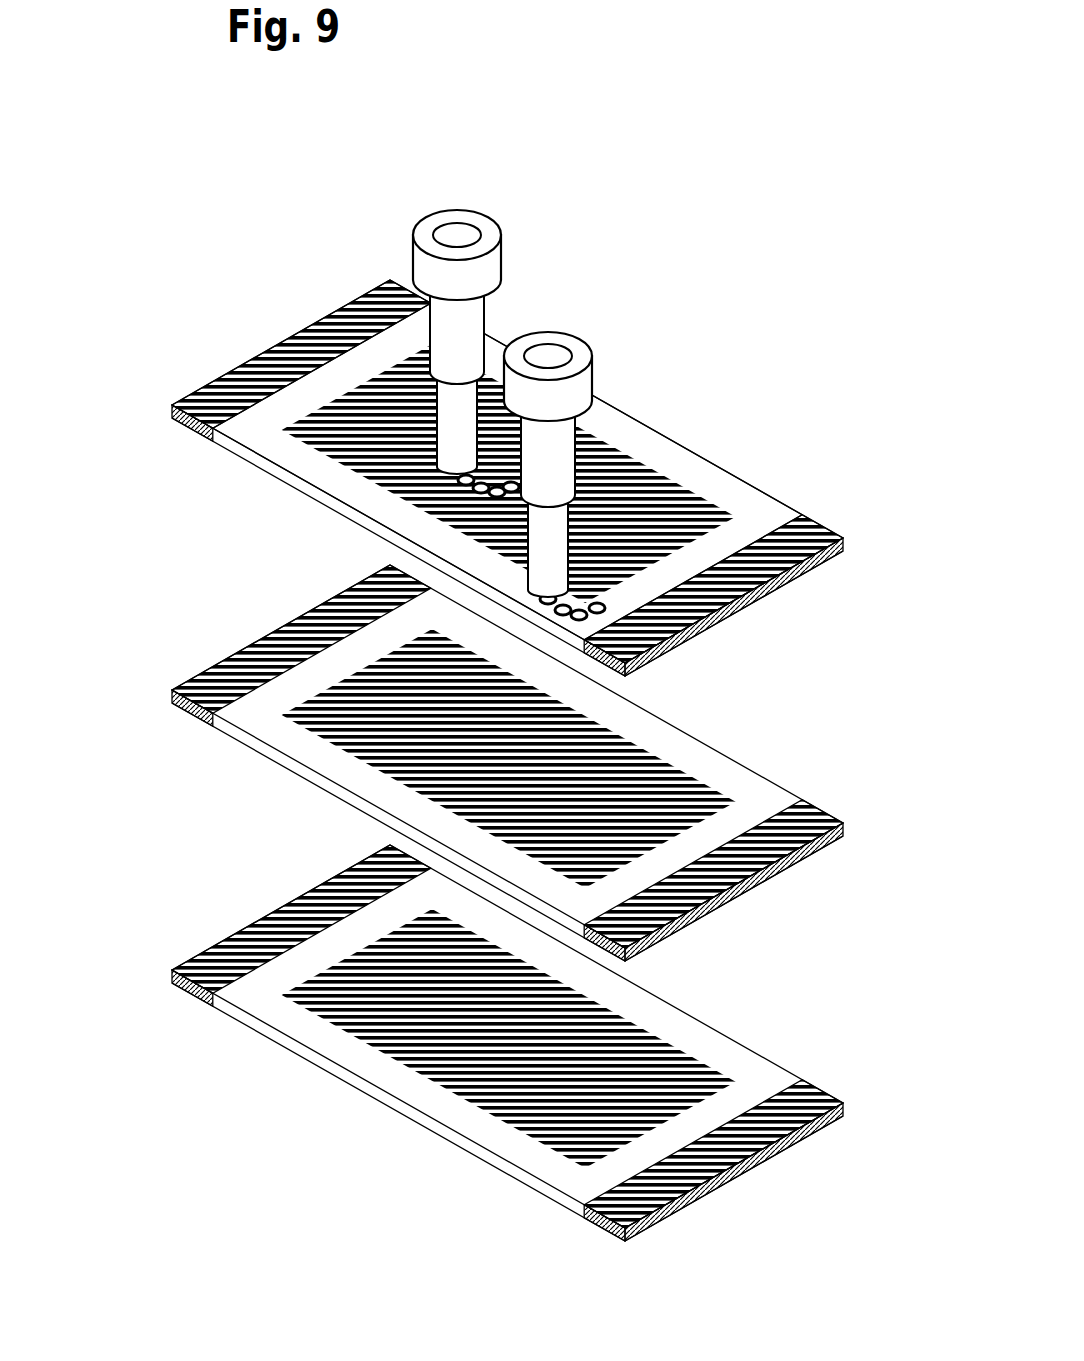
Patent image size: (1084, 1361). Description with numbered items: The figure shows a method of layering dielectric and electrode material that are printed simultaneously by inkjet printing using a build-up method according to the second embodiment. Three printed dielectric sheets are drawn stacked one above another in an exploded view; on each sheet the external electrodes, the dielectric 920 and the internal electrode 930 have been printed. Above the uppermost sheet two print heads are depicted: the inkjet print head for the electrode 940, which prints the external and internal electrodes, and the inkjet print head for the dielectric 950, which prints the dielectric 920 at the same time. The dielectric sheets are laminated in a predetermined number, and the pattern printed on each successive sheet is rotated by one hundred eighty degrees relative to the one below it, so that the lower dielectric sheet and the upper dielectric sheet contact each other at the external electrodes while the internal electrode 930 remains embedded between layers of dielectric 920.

The dielectric 920 is at (763, 512).
The internal electrode 930 is at (653, 468).
The inkjet print head for the electrode 940 is at (436, 226).
The inkjet print head for the dielectric 950 is at (572, 332).